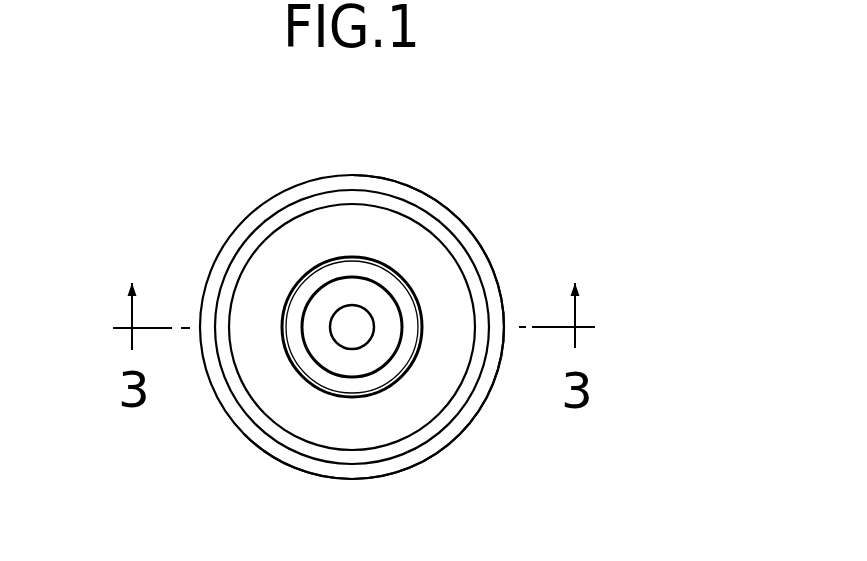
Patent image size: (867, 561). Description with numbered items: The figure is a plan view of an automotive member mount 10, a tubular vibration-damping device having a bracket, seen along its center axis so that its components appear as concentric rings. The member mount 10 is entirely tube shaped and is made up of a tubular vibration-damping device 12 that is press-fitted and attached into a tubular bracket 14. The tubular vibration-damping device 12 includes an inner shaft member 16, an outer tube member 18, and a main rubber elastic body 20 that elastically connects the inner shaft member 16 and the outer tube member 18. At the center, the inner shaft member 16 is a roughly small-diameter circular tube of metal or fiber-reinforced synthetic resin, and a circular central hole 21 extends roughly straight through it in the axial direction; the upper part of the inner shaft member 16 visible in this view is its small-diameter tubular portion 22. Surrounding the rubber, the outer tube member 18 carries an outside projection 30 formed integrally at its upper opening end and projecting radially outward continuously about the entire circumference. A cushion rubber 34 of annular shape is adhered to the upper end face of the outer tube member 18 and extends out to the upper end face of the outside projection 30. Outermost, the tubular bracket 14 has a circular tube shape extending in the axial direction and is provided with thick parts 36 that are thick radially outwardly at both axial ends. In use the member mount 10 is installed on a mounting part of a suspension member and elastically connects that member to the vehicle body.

The member mount 10 is at (531, 162).
The tubular vibration-damping device 12 is at (425, 193).
The tubular bracket 14 is at (489, 237).
The inner shaft member 16 is at (316, 372).
The outer tube member 18 is at (451, 435).
The main rubber elastic body 20 is at (269, 229).
The central hole 21 is at (346, 330).
The small-diameter tubular portion 22 is at (347, 293).
The outside projection 30 is at (358, 455).
The cushion rubber 34 is at (449, 312).
The thick parts 36 is at (483, 393).